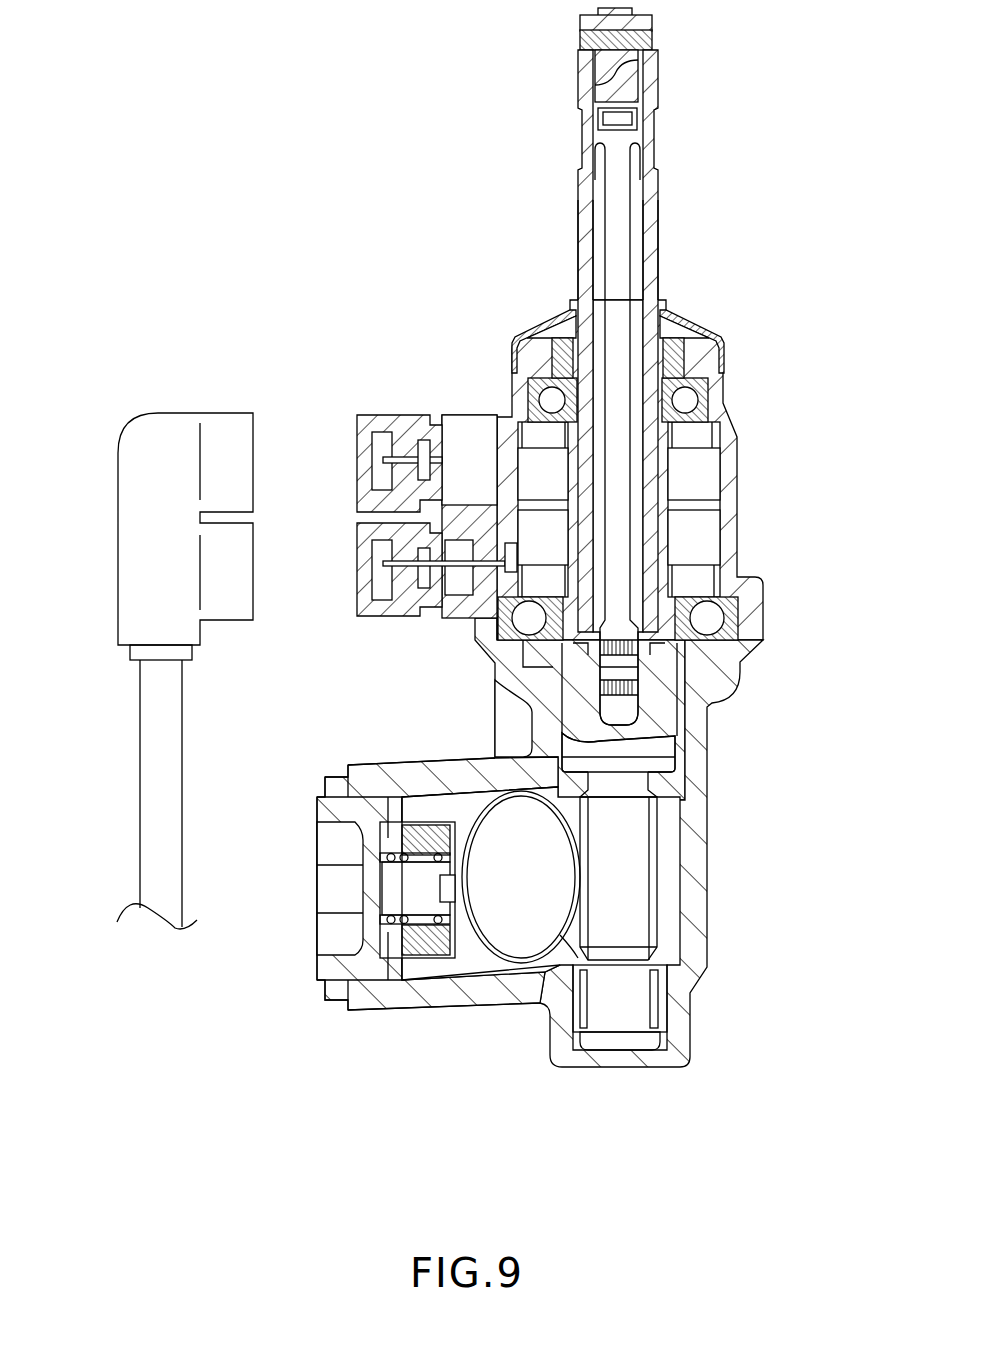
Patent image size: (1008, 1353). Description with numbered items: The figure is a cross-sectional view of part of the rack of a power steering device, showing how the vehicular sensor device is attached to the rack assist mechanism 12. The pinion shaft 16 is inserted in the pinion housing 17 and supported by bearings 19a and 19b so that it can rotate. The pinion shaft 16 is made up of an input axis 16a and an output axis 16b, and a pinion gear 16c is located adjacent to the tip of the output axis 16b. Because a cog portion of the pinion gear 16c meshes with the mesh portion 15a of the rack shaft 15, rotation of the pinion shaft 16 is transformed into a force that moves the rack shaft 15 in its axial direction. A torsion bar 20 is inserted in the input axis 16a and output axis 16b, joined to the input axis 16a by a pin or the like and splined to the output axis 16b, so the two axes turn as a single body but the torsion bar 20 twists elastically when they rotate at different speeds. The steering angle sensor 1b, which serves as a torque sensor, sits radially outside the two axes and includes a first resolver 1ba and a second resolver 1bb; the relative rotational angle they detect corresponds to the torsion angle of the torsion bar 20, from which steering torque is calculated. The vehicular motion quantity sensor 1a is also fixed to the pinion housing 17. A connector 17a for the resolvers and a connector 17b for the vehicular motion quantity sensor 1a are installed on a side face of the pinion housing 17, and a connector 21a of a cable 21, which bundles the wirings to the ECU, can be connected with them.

The vehicular motion quantity sensor 1a is at (468, 438).
The steering angle sensor 1b is at (689, 509).
The first resolver 1ba is at (702, 470).
The second resolver 1bb is at (665, 537).
The rack assist mechanism 12 is at (405, 1012).
The rack shaft 15 is at (512, 965).
The mesh portion 15a is at (577, 940).
The pinion shaft 16 is at (658, 99).
The input axis 16a is at (658, 266).
The output axis 16b is at (660, 745).
The pinion gear 16c is at (660, 922).
The pinion housing 17 is at (765, 612).
The connector 17a is at (384, 617).
The connector 17b is at (382, 425).
The bearing 19a is at (705, 390).
The bearing 19b is at (478, 630).
The torsion bar 20 is at (615, 252).
The cable 21 is at (140, 775).
The connector 21a is at (226, 413).